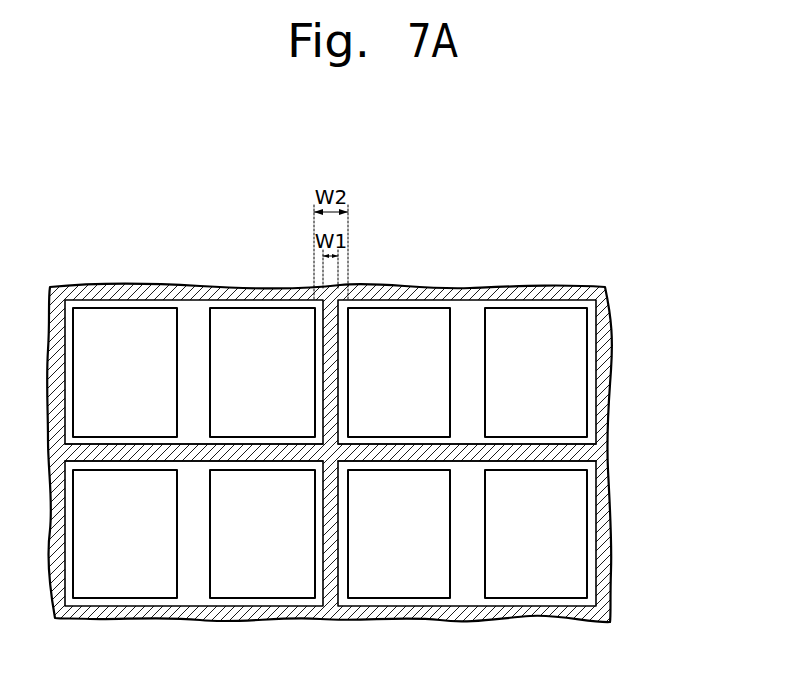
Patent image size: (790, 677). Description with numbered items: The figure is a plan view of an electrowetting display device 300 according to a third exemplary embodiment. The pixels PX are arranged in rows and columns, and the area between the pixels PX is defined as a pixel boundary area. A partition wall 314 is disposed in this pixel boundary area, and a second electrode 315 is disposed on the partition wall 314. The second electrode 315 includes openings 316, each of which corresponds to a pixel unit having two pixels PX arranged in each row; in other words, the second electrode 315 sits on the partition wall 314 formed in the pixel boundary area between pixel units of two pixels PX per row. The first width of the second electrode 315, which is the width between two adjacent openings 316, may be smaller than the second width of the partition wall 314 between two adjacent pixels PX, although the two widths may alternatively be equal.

The electrowetting display device 300 is at (577, 208).
The partition wall 314 is at (593, 421).
The second electrode 315 is at (595, 453).
The openings 316 is at (338, 355).
The pixels PX is at (485, 400).